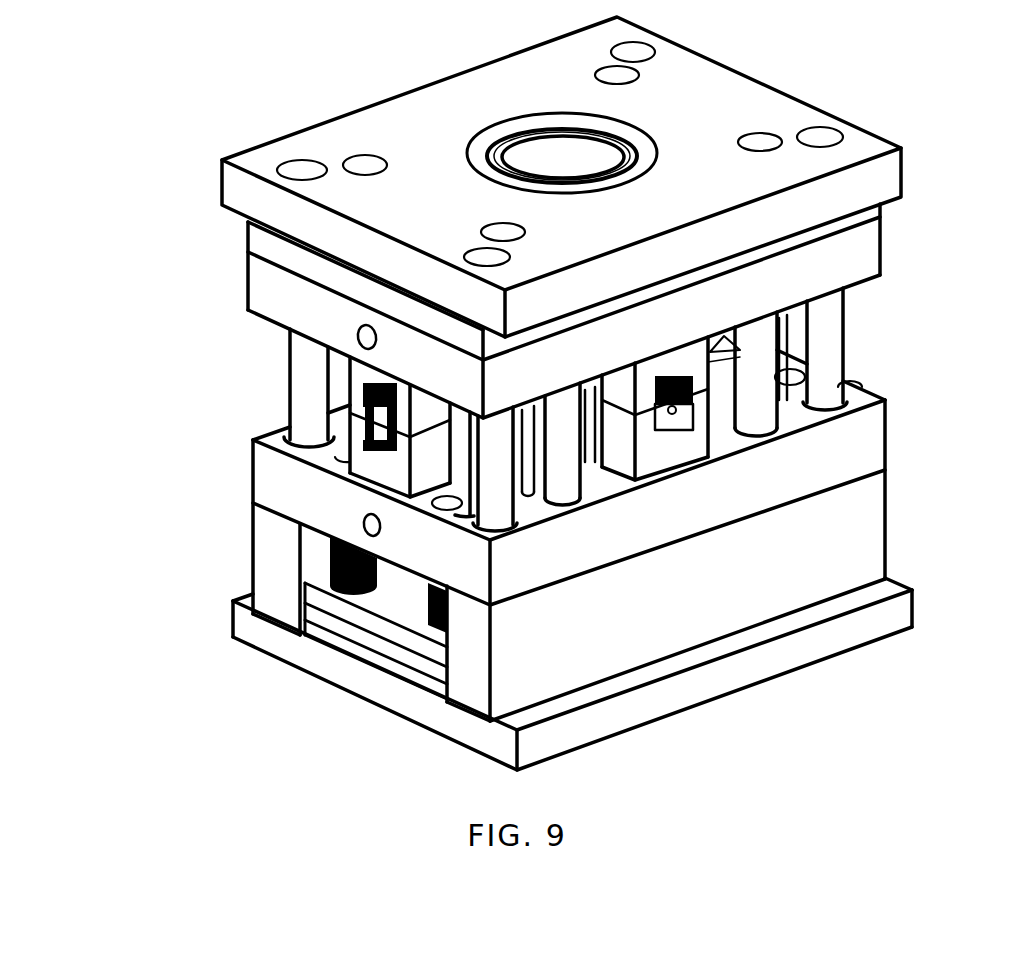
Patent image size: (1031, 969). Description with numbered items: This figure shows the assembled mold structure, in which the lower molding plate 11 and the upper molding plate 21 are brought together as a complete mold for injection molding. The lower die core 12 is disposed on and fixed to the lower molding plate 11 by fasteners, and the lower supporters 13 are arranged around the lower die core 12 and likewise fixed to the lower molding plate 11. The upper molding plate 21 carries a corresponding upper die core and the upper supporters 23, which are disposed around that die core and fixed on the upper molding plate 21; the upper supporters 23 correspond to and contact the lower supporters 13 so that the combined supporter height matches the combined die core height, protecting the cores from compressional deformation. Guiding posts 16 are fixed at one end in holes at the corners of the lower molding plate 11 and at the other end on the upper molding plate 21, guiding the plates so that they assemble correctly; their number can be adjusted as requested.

The lower molding plate 11 is at (435, 570).
The lower die core 12 is at (710, 367).
The lower supporter 13 is at (373, 468).
The guiding post 16 is at (307, 368).
The upper molding plate 21 is at (267, 287).
The upper supporter 23 is at (360, 387).